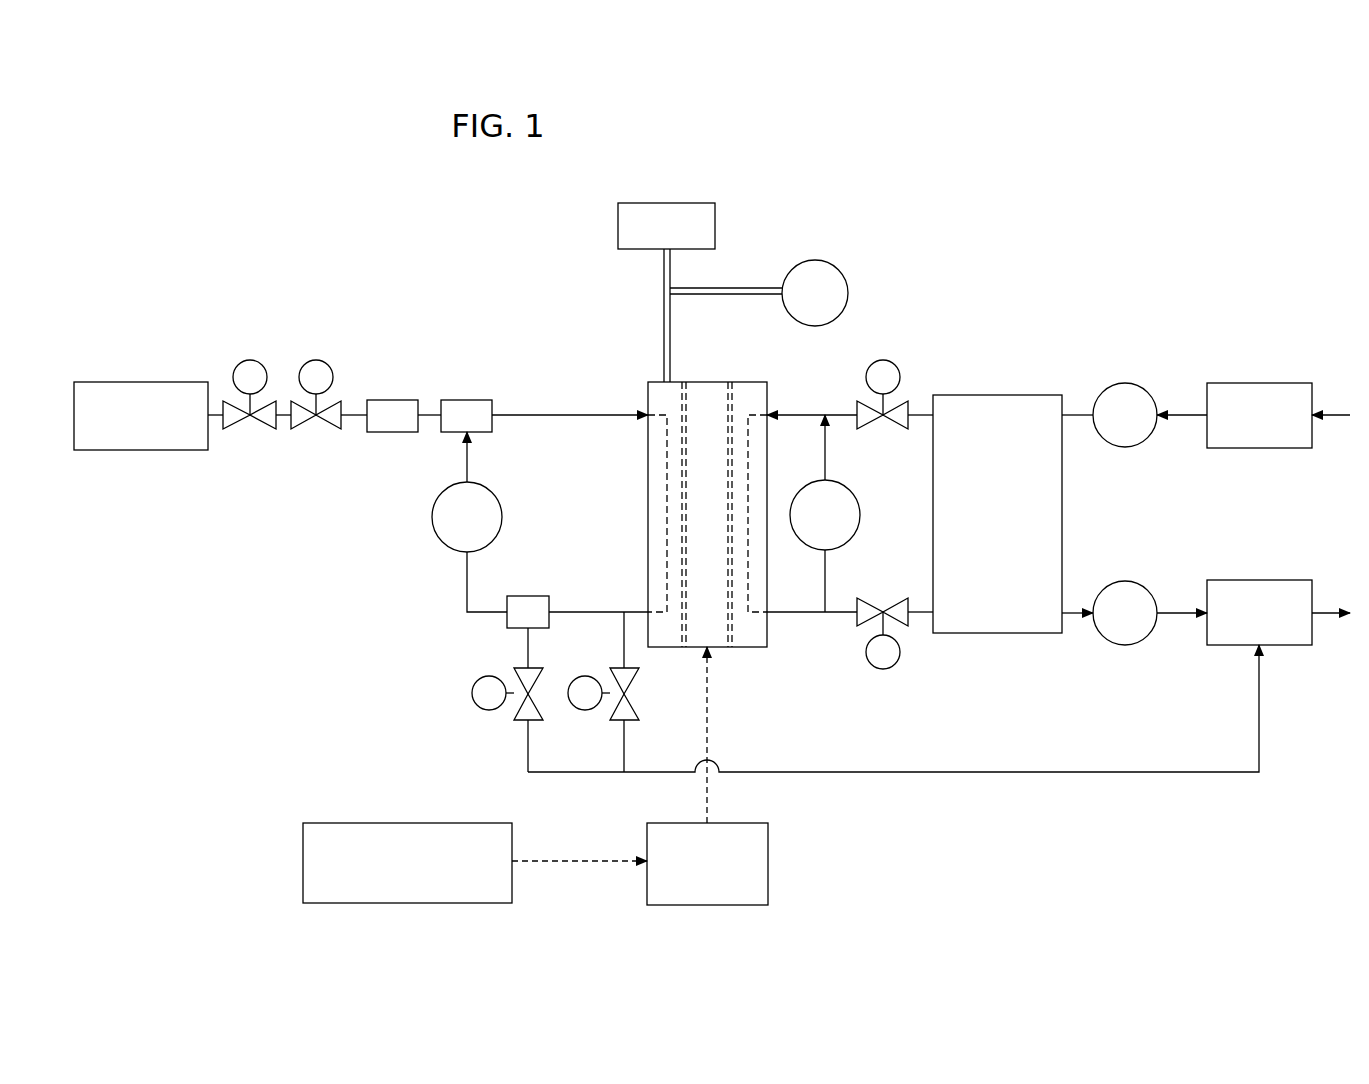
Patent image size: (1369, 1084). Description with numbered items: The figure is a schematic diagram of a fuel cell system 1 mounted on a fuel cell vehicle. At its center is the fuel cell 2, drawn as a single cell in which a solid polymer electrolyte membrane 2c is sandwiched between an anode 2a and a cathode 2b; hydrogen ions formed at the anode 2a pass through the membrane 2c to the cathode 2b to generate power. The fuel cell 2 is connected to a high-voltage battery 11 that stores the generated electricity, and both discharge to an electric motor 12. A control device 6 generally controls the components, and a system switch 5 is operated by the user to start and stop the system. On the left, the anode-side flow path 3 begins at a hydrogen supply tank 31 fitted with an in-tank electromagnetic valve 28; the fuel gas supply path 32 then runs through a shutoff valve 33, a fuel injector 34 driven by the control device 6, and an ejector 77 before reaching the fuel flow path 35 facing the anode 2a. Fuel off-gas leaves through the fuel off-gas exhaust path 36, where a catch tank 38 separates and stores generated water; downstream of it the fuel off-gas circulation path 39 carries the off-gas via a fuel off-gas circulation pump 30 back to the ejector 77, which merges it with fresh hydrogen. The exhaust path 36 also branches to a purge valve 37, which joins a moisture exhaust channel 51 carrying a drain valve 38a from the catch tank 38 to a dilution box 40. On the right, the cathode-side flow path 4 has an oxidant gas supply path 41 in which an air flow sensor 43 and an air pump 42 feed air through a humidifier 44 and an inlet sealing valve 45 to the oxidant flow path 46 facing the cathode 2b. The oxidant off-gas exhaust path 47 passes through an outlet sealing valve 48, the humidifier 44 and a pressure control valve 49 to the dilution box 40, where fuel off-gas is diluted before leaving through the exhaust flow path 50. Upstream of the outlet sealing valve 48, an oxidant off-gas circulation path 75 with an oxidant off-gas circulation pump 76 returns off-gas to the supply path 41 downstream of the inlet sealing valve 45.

The fuel cell system 1 is at (1250, 207).
The fuel cell 2 is at (770, 407).
The anode 2a is at (684, 400).
The cathode 2b is at (733, 400).
The solid polymer electrolyte membrane 2c is at (709, 395).
The anode-side flow path 3 is at (328, 233).
The cathode-side flow path 4 is at (1234, 323).
The system switch 5 is at (303, 840).
The control device 6 is at (768, 835).
The high-voltage battery 11 is at (715, 215).
The electric motor 12 is at (838, 270).
The in-tank electromagnetic valve 28 is at (250, 360).
The fuel off-gas circulation pump 30 is at (492, 492).
The hydrogen supply tank 31 is at (142, 382).
The fuel gas supply path 32 is at (544, 415).
The shutoff valve 33 is at (316, 360).
The fuel injector 34 is at (395, 400).
The fuel flow path 35 is at (666, 415).
The fuel off-gas exhaust path 36 is at (590, 612).
The purge valve 37 is at (576, 712).
The catch tank 38 is at (528, 596).
The drain valve 38a is at (480, 712).
The fuel off-gas circulation path 39 is at (467, 580).
The dilution box 40 is at (1250, 580).
The oxidant gas supply path 41 is at (1183, 410).
The air pump 42 is at (1126, 383).
The air flow sensor 43 is at (1238, 383).
The humidifier 44 is at (1062, 490).
The inlet sealing valve 45 is at (883, 360).
The oxidant flow path 46 is at (749, 415).
The oxidant off-gas exhaust path 47 is at (793, 612).
The outlet sealing valve 48 is at (880, 670).
The pressure control valve 49 is at (1125, 581).
The exhaust flow path 50 is at (1326, 613).
The moisture exhaust channel 51 is at (1012, 772).
The oxidant off-gas circulation path 75 is at (827, 455).
The oxidant off-gas circulation pump 76 is at (857, 530).
The ejector 77 is at (458, 400).